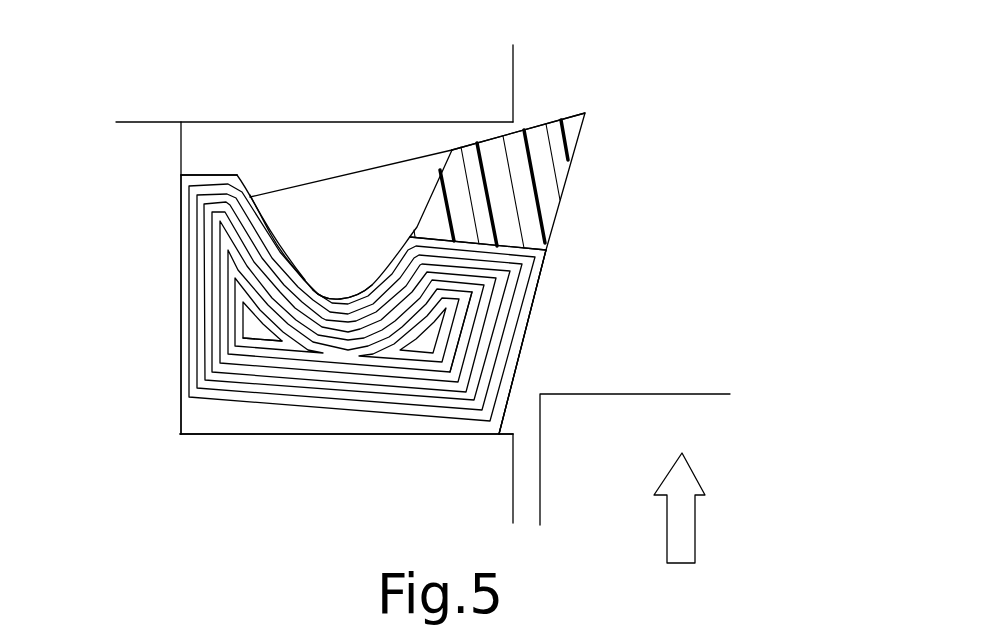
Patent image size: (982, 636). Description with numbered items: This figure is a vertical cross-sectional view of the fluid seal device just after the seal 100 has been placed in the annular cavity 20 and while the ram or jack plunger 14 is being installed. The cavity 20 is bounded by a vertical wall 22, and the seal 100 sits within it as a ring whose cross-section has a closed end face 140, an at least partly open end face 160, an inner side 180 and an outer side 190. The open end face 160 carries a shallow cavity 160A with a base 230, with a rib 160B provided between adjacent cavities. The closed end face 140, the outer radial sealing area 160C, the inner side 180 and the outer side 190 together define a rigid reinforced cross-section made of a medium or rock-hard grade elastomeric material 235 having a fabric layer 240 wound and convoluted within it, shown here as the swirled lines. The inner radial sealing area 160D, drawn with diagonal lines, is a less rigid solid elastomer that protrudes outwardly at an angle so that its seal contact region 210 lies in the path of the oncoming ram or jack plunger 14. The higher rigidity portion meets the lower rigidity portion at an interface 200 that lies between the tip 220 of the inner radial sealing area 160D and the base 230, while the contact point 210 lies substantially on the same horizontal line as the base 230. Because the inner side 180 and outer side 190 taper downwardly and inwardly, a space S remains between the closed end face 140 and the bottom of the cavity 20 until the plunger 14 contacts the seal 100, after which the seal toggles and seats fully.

The seal 100 is at (703, 106).
The ram or jack plunger 14 is at (622, 458).
The annular cavity 20 is at (237, 162).
The vertical wall 22 is at (150, 165).
The closed end face 140 is at (317, 410).
The at least partly open end face 160 is at (313, 161).
The shallow cavity 160A is at (312, 283).
The rib 160B is at (410, 160).
The outer radial sealing area 160C is at (178, 205).
The inner radial sealing area 160D is at (548, 168).
The inner side 180 is at (522, 353).
The outer side 190 is at (187, 318).
The interface 200 is at (545, 266).
The seal contact region 210 is at (533, 307).
The tip 220 is at (585, 113).
The base of cavity 230 is at (344, 295).
The elastomeric material 235 is at (470, 410).
The fabric layer 240 is at (257, 362).
The space S is at (205, 412).